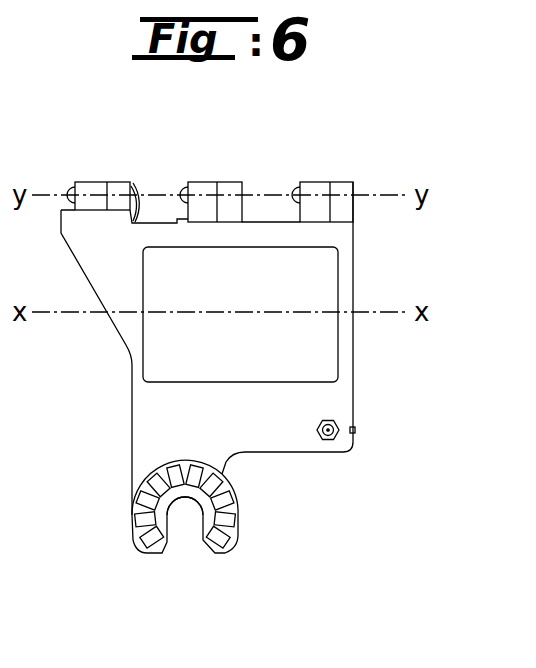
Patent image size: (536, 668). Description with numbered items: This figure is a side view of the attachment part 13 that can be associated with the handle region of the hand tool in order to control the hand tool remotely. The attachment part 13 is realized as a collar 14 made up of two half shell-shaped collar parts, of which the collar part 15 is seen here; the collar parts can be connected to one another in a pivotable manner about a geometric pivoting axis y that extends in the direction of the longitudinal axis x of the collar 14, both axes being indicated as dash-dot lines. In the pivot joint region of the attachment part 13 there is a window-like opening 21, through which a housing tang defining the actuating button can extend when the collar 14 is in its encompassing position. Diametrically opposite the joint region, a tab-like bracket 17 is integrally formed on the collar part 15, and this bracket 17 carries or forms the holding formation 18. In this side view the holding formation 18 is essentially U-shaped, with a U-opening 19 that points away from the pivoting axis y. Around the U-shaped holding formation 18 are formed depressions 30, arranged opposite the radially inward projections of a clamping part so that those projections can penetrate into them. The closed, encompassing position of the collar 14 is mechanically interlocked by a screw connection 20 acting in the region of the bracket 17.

The attachment part 13 is at (319, 167).
The collar 14 is at (313, 395).
The collar part 15 is at (172, 398).
The tab-like bracket 17 is at (267, 420).
The holding formation 18 is at (147, 548).
The U-opening 19 is at (185, 517).
The screw connection 20 is at (338, 431).
The window-like opening 21 is at (155, 208).
The depression 30 is at (147, 503).